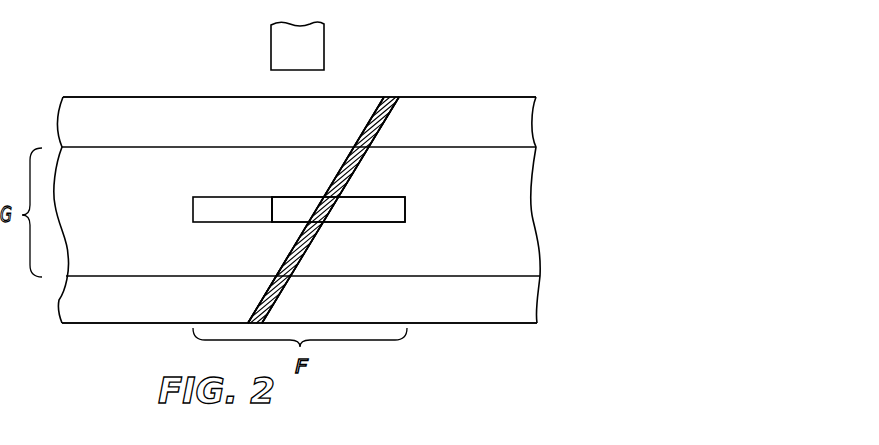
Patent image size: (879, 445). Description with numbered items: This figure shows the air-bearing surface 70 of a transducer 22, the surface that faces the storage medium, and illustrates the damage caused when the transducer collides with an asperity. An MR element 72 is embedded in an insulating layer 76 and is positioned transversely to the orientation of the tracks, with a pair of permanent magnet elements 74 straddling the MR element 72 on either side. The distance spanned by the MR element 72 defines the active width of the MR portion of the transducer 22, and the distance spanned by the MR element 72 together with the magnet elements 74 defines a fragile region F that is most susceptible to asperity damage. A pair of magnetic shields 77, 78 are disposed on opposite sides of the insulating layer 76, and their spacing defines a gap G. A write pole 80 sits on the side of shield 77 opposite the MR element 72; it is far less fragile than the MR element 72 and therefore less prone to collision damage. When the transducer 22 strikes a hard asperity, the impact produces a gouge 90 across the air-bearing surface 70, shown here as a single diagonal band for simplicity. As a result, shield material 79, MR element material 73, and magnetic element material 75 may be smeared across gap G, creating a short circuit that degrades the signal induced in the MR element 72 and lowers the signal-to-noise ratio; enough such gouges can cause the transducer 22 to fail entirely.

The transducer 22 is at (390, 72).
The air-bearing surface 70 is at (523, 237).
The MR element 72 is at (290, 197).
The MR element material 73 is at (353, 176).
The permanent magnet elements 74 is at (192, 203).
The magnetic element material 75 is at (323, 210).
The insulating layer 76 is at (457, 257).
The magnetic shield 77 is at (523, 120).
The magnetic shield 78 is at (523, 295).
The shield material 79 is at (282, 262).
The write pole 80 is at (271, 54).
The gouge 90 is at (395, 118).